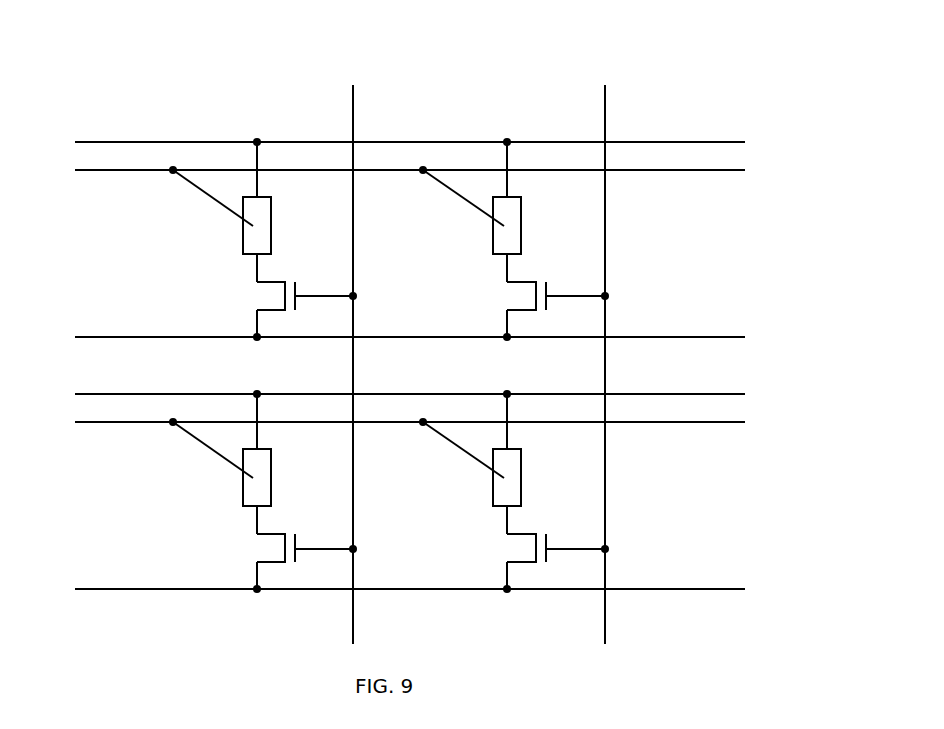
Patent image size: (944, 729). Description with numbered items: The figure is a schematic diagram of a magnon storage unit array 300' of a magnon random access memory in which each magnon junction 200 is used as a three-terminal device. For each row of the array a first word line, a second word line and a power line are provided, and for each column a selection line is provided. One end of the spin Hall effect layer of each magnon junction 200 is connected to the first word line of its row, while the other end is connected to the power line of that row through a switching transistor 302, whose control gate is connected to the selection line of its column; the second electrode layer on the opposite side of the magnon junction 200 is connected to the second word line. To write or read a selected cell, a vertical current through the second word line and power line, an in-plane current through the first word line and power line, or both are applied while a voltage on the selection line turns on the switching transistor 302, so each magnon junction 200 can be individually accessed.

The magnon storage unit array 300' is at (398, 322).
The magnon junction 200 is at (220, 227).
The switching transistor 302 is at (306, 279).